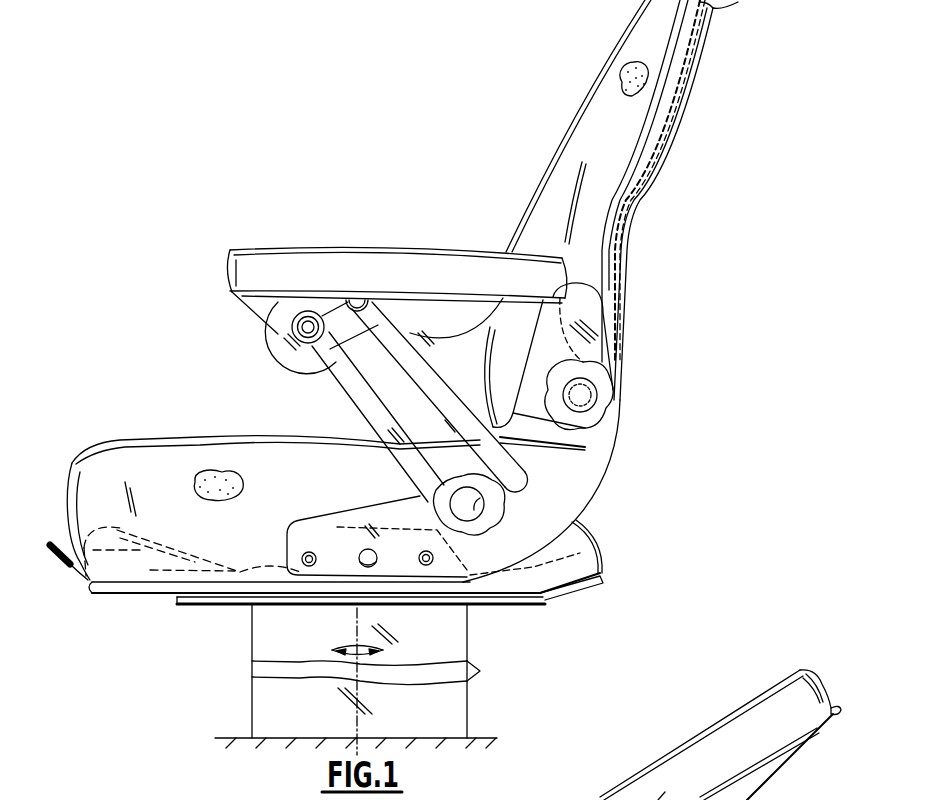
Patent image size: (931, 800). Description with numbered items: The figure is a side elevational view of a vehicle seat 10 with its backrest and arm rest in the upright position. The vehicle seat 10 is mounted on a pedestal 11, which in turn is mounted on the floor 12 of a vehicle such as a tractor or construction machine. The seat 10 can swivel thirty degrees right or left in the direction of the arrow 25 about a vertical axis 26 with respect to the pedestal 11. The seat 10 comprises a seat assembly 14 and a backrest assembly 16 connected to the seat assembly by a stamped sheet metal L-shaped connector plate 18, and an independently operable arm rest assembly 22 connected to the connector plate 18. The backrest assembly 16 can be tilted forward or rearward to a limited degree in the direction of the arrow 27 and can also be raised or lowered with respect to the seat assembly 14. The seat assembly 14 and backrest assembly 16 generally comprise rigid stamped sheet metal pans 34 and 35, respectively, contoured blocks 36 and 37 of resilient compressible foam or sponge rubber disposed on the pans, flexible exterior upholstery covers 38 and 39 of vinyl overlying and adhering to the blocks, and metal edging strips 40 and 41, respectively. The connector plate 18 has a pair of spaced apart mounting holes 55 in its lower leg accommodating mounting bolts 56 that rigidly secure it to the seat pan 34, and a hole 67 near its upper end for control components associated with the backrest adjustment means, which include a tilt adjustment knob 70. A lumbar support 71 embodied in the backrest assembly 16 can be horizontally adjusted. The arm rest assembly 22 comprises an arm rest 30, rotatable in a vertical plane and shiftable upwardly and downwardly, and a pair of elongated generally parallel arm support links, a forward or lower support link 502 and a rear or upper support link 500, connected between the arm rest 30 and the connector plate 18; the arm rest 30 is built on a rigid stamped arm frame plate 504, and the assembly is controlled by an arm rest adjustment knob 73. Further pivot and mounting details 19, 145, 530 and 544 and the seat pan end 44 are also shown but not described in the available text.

The vehicle seat 10 is at (461, 214).
The pedestal 11 is at (378, 673).
The floor 12 is at (476, 740).
The seat assembly 14 is at (226, 436).
The backrest assembly 16 is at (597, 74).
The connector plate 18 is at (608, 458).
The pivot bolt 19 is at (362, 566).
The arm rest assembly 22 is at (357, 405).
The arrow 25 is at (331, 643).
The vertical axis 26 is at (360, 730).
The arrow 27 is at (683, 767).
The arm rest 30 is at (331, 246).
The seat pan 34 is at (276, 546).
The backrest pan 35 is at (686, 104).
The resilient block 36 is at (238, 481).
The resilient block 37 is at (648, 80).
The upholstery cover 38 is at (115, 490).
The upholstery cover 39 is at (578, 178).
The edging strip 40 is at (597, 584).
The edging strip 41 is at (730, 8).
The seat pan end 44 is at (592, 546).
The mounting holes 55 is at (317, 557).
The mounting bolts 56 is at (310, 553).
The hole 67 is at (612, 389).
The tilt adjustment knob 70 is at (612, 409).
The lumbar support 71 is at (572, 254).
The arm rest adjustment knob 73 is at (492, 511).
The pivot 145 is at (373, 566).
The rear support link 500 is at (446, 397).
The forward support link 502 is at (368, 417).
The arm frame plate 504 is at (258, 313).
The pivot pin 530 is at (290, 330).
The bushing 544 is at (300, 341).